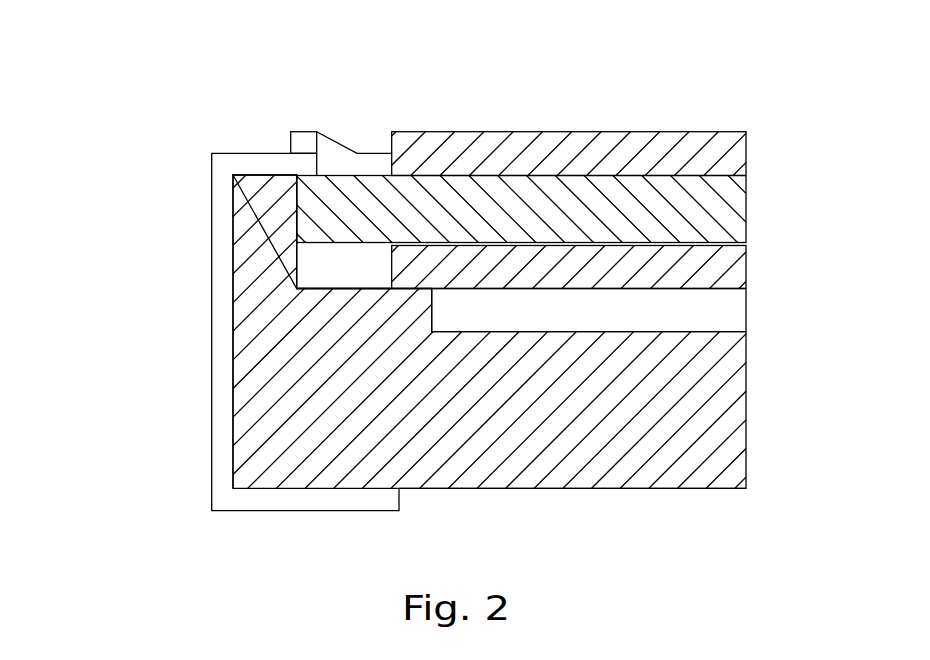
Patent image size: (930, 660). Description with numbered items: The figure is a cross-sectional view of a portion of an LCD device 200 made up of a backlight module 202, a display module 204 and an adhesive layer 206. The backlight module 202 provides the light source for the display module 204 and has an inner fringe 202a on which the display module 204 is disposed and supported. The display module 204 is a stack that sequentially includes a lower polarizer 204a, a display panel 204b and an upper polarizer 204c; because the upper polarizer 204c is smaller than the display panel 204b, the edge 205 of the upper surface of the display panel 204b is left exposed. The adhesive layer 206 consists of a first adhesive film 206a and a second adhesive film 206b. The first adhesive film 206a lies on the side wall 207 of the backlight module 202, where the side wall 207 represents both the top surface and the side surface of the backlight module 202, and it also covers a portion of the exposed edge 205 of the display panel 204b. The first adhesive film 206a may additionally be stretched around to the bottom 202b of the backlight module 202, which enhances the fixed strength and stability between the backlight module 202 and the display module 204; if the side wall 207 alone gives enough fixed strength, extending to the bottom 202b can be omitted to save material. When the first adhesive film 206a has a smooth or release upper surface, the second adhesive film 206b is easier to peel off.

The LCD device 200 is at (205, 72).
The backlight module 202 is at (712, 411).
The inner fringe 202a is at (352, 288).
The bottom 202b is at (665, 490).
The display module 204 is at (574, 213).
The lower polarizer 204a is at (597, 271).
The display panel 204b is at (712, 212).
The upper polarizer 204c is at (712, 152).
The edge of the upper surface of the display panel 205 is at (329, 156).
The adhesive layer 206 is at (219, 301).
The first adhesive film 206a is at (227, 218).
The second adhesive film 206b is at (305, 142).
The side wall 207 is at (235, 370).